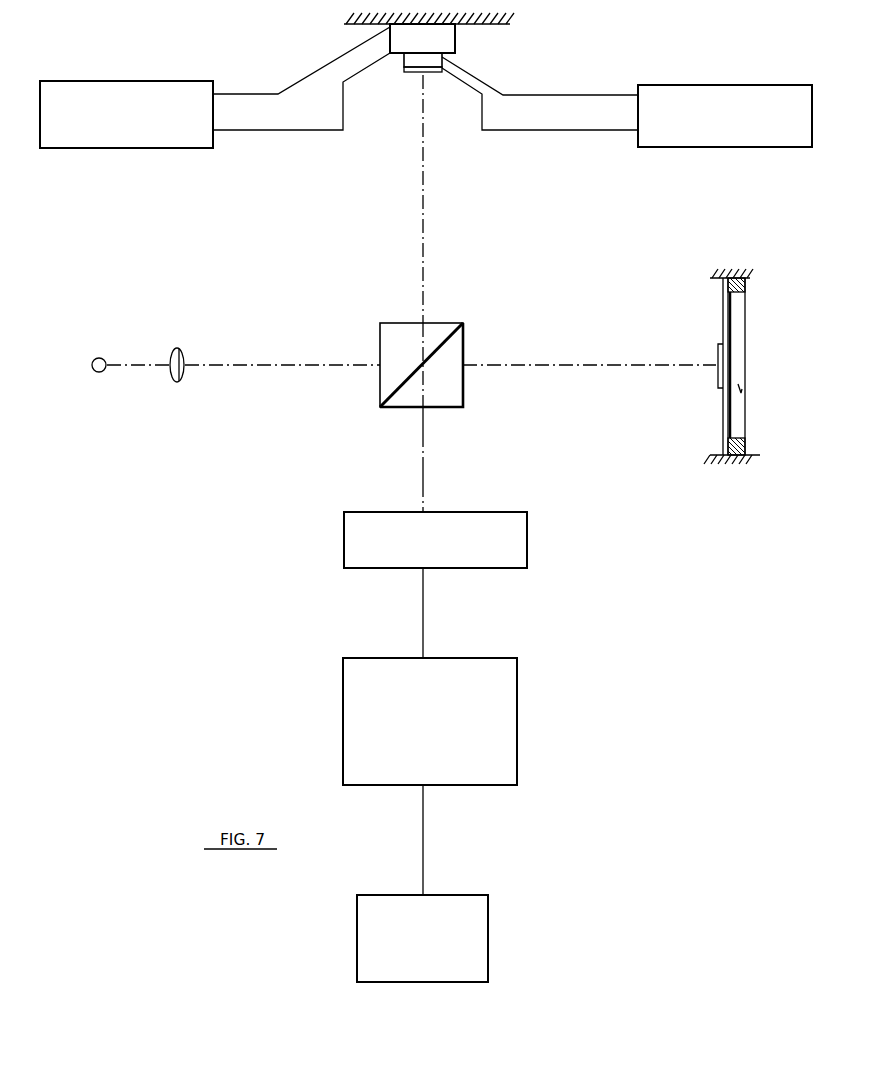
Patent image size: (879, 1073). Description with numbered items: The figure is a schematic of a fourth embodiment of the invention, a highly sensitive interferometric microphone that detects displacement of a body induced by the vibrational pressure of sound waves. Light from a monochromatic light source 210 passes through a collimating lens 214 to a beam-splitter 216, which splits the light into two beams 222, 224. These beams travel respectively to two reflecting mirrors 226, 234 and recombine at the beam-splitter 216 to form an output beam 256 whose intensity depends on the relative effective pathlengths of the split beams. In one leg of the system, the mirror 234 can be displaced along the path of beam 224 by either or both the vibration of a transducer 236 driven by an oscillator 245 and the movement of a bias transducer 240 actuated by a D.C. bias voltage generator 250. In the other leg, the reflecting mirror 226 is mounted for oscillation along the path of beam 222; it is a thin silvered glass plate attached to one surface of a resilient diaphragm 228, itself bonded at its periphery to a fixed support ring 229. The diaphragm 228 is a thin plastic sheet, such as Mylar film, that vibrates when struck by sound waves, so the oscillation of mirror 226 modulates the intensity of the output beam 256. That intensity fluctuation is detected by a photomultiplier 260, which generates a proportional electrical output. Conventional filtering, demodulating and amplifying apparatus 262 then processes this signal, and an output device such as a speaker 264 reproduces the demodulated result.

The monochromatic light source 210 is at (100, 372).
The collimating lens 214 is at (181, 355).
The beam-splitter 216 is at (439, 333).
The beam 222 is at (528, 365).
The beam 224 is at (423, 252).
The reflecting mirror 226 is at (718, 350).
The resilient diaphragm 228 is at (723, 300).
The fixed support ring 229 is at (745, 283).
The reflecting mirror 234 is at (433, 71).
The transducer 236 is at (404, 57).
The bias transducer 240 is at (456, 46).
The oscillator 245 is at (688, 95).
The D.-C. bias voltage generator 250 is at (155, 92).
The output beam 256 is at (423, 462).
The photomultiplier 260 is at (470, 520).
The filtering, demodulating and amplifying apparatus 262 is at (485, 672).
The speaker 264 is at (488, 950).